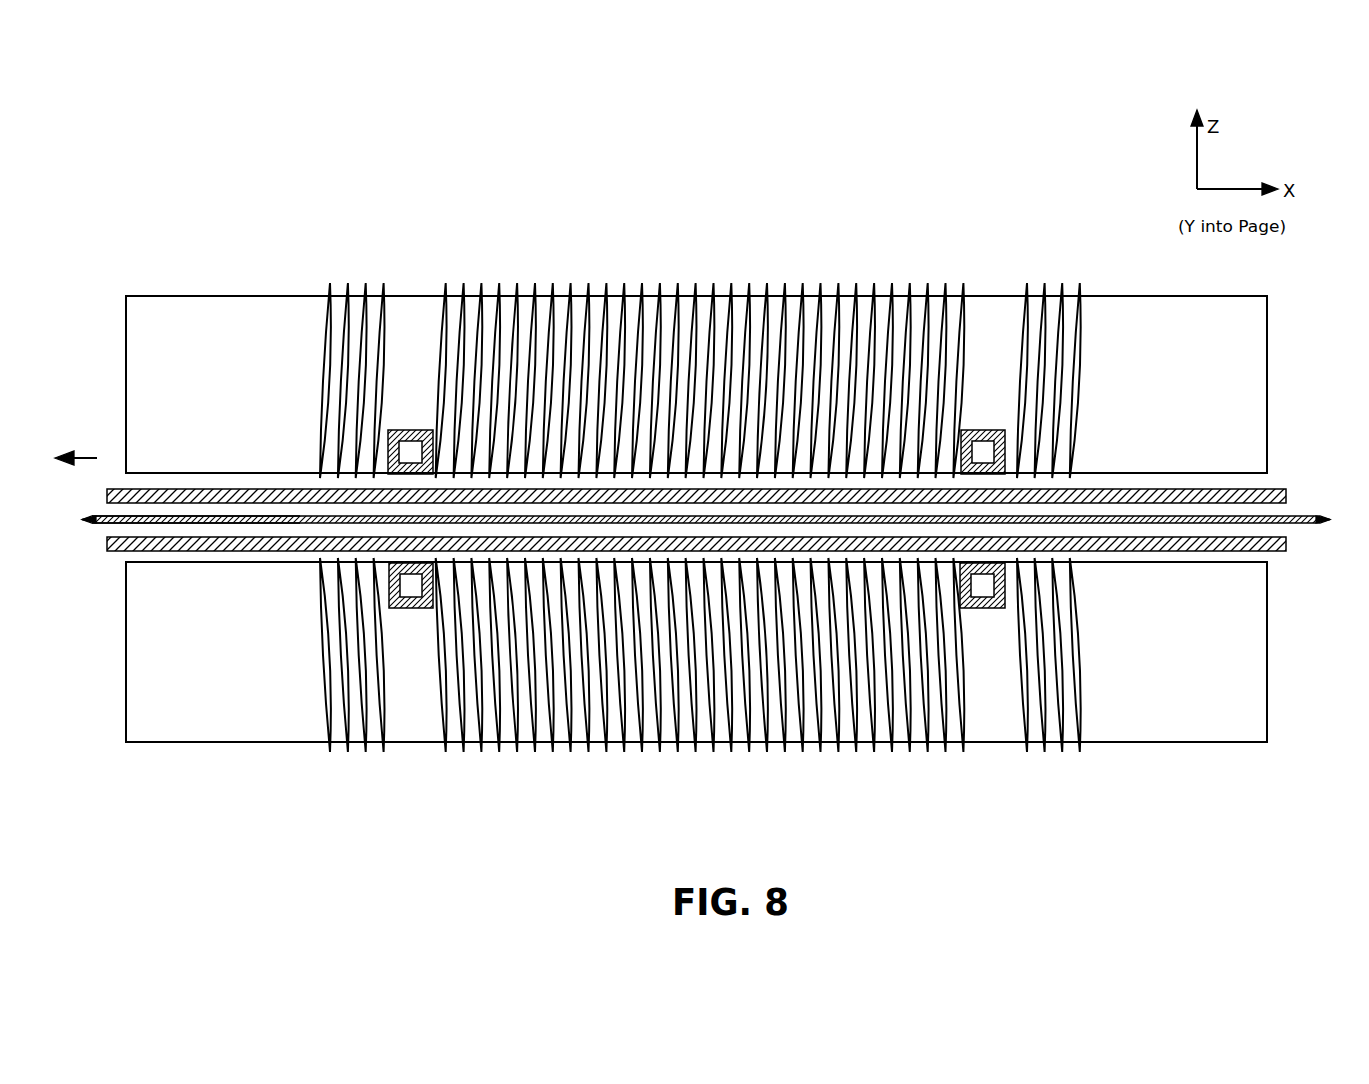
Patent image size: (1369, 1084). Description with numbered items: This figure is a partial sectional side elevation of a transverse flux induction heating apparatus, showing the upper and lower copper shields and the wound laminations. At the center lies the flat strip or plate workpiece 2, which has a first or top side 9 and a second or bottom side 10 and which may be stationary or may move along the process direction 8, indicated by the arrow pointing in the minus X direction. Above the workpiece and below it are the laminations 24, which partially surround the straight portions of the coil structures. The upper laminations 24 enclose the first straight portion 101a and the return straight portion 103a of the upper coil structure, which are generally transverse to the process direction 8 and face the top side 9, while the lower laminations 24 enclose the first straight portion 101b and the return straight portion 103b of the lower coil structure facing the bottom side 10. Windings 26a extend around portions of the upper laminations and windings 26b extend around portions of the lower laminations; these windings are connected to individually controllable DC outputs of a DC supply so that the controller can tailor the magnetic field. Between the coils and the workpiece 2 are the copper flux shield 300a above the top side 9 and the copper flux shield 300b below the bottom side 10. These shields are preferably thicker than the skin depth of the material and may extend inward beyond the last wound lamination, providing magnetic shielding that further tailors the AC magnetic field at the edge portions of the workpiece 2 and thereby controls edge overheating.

The workpiece 2 is at (84, 519).
The process direction 8 is at (97, 458).
The first side 9 is at (98, 515).
The second side 10 is at (97, 525).
The laminations 24 is at (158, 397).
The windings 26a is at (328, 284).
The windings 26b is at (348, 754).
The first straight portion 101a is at (411, 430).
The first straight portion 101b is at (982, 608).
The return straight portion 103a is at (983, 430).
The return straight portion 103b is at (411, 608).
The copper flux shield 300a is at (1287, 496).
The copper flux shield 300b is at (1287, 544).